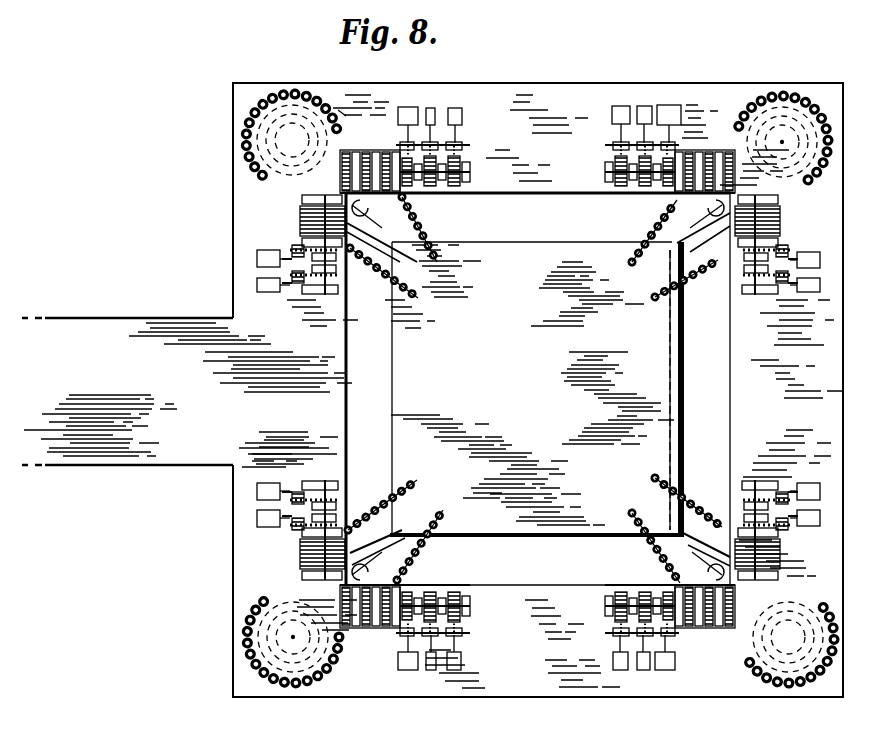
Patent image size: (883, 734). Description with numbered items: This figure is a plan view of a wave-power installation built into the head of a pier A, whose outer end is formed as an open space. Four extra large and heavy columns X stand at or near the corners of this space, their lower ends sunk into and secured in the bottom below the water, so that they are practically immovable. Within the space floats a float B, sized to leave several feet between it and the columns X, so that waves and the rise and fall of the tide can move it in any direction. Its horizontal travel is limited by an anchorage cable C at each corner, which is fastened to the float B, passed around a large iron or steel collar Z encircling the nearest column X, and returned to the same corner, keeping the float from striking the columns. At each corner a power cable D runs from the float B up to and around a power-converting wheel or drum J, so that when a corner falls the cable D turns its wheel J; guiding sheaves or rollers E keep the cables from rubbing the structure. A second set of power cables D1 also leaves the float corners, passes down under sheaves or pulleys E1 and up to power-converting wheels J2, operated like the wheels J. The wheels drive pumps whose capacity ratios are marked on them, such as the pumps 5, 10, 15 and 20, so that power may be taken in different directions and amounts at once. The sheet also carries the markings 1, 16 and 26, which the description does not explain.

The pier A is at (432, 390).
The float B is at (538, 389).
The anchorage cable C is at (420, 220).
The power cable D is at (538, 396).
The power cable D1 is at (380, 232).
The guiding sheave or roller E is at (538, 390).
The sheave or pulley E1 is at (372, 219).
The power-converting wheel or drum J is at (292, 220).
The power-converting wheel J2 is at (698, 642).
The column X is at (540, 388).
The collar Z is at (266, 694).
The sprocket 1 is at (338, 110).
The pump 20 is at (408, 381).
The pump 5 is at (431, 381).
The pump 10 is at (538, 381).
The pump 15 is at (818, 527).
The box 16 is at (644, 652).
The box 26 is at (665, 652).